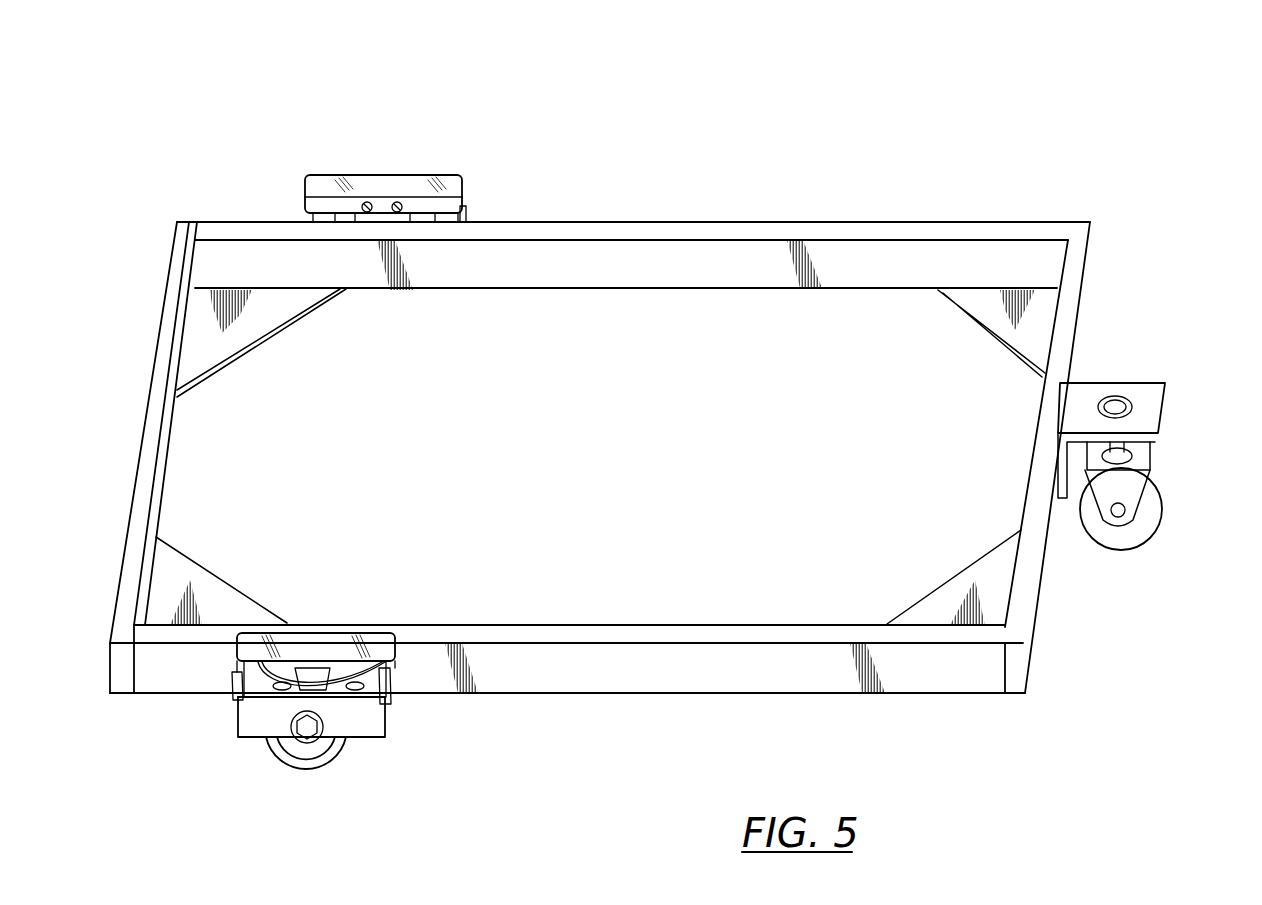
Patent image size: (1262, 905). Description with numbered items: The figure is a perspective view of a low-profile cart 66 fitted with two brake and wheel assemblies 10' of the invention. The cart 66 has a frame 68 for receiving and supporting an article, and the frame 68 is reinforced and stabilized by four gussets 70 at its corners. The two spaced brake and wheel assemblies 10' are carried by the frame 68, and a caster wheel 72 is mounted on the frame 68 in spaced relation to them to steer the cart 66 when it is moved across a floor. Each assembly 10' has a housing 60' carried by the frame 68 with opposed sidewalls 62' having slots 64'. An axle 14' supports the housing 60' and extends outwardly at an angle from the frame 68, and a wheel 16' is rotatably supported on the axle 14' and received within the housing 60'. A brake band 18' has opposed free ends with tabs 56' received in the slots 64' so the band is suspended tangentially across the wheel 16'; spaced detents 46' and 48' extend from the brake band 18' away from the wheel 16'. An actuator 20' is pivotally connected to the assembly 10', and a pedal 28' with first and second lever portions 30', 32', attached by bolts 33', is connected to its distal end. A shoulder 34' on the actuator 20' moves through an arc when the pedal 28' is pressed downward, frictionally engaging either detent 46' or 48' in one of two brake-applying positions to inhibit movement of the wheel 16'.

The brake and wheel assembly 10' is at (304, 450).
The axle 14' is at (340, 766).
The wheel 16' is at (308, 799).
The brake band 18' is at (345, 630).
The actuator 20' is at (303, 404).
The pedal 28' is at (376, 336).
The first lever portion 30' is at (385, 373).
The second lever portion 32' is at (333, 367).
The bolts 33' is at (387, 150).
The shoulder 34' is at (321, 607).
The detent 46' is at (340, 622).
The detent 48' is at (311, 615).
The tabs 56' is at (318, 661).
The housing 60' is at (255, 749).
The sidewalls 62' is at (303, 484).
The slots 64' is at (273, 644).
The low-profile cart 66 is at (837, 190).
The frame 68 is at (596, 222).
The gussets 70 is at (253, 310).
The caster wheel 72 is at (1163, 405).